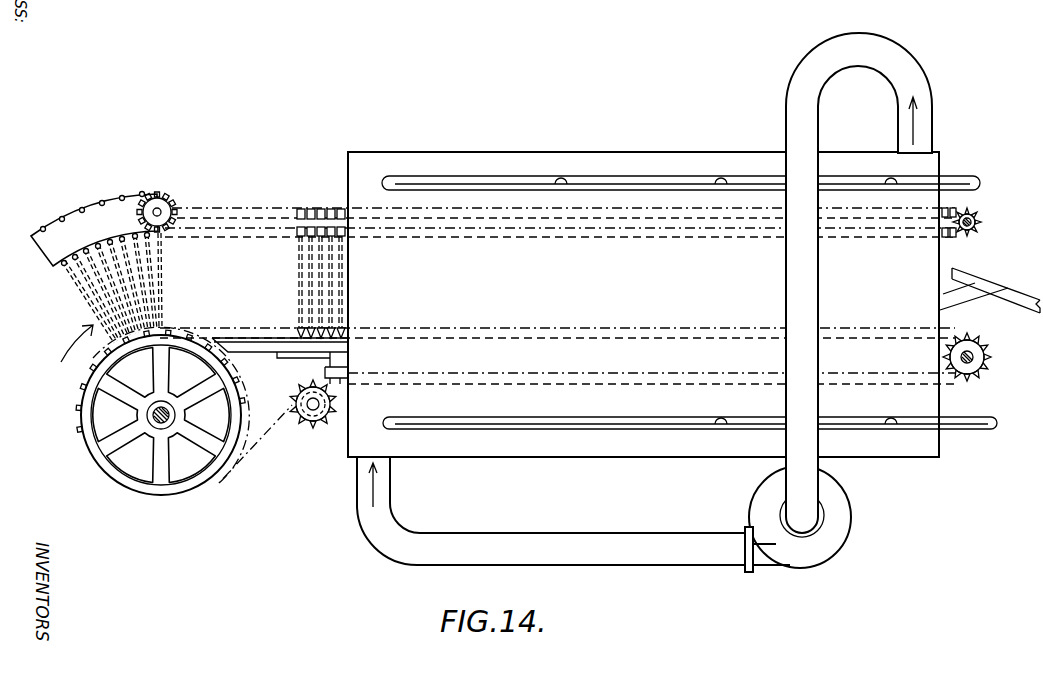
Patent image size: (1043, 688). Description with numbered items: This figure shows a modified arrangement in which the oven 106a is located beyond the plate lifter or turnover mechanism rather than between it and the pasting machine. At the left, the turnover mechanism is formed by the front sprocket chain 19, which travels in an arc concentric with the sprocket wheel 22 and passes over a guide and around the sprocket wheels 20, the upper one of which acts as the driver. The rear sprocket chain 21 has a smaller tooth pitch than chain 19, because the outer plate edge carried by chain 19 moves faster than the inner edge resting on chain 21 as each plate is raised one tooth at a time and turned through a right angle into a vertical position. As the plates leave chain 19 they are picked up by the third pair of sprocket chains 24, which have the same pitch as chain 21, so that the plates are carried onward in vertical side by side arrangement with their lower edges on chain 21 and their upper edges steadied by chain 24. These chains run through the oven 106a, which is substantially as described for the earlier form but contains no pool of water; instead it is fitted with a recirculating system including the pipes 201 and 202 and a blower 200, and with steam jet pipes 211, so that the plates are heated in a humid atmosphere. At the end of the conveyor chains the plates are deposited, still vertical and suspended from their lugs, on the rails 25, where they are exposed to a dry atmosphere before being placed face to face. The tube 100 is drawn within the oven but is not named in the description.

The sprocket chain 19 is at (52, 226).
The sprocket wheels 20 is at (166, 199).
The sprocket chain 21 is at (317, 333).
The sprocket wheel 22 is at (128, 483).
The sprocket chains 24 is at (326, 212).
The rails 25 is at (973, 273).
The spray tube 100 is at (562, 184).
The oven 106a is at (643, 304).
The blower 200 is at (848, 537).
The pipe 201 is at (792, 92).
The pipe 202 is at (506, 536).
The steam jet pipes 211 is at (963, 177).